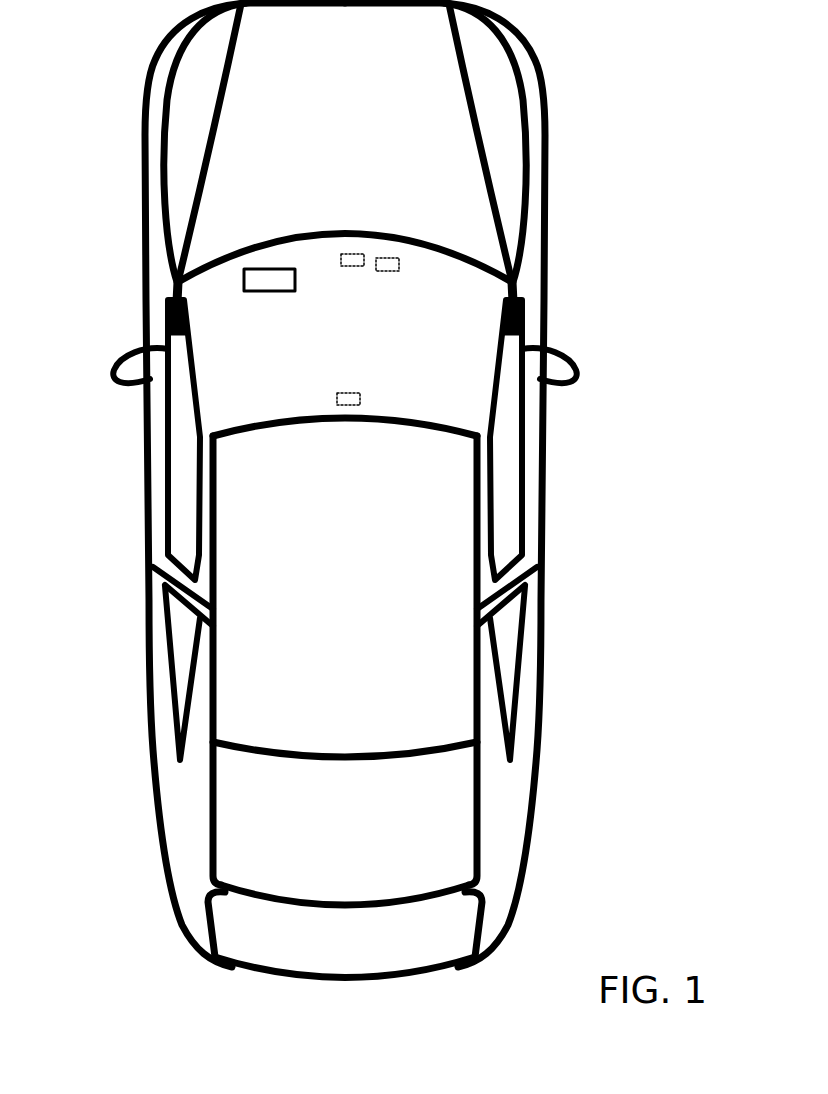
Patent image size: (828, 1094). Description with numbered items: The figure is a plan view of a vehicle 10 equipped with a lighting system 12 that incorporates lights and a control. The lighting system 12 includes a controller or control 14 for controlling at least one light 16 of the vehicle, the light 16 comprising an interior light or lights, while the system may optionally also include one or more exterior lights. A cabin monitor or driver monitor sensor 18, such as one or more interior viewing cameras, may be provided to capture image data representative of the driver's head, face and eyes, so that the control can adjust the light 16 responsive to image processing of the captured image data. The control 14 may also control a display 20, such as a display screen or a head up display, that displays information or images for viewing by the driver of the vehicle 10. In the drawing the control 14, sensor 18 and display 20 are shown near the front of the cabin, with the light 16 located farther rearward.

The vehicle 10 is at (113, 96).
The lighting system 12 is at (388, 187).
The controller 14 is at (384, 260).
The light 16 is at (350, 390).
The driver monitor sensor 18 is at (347, 252).
The display 20 is at (275, 277).